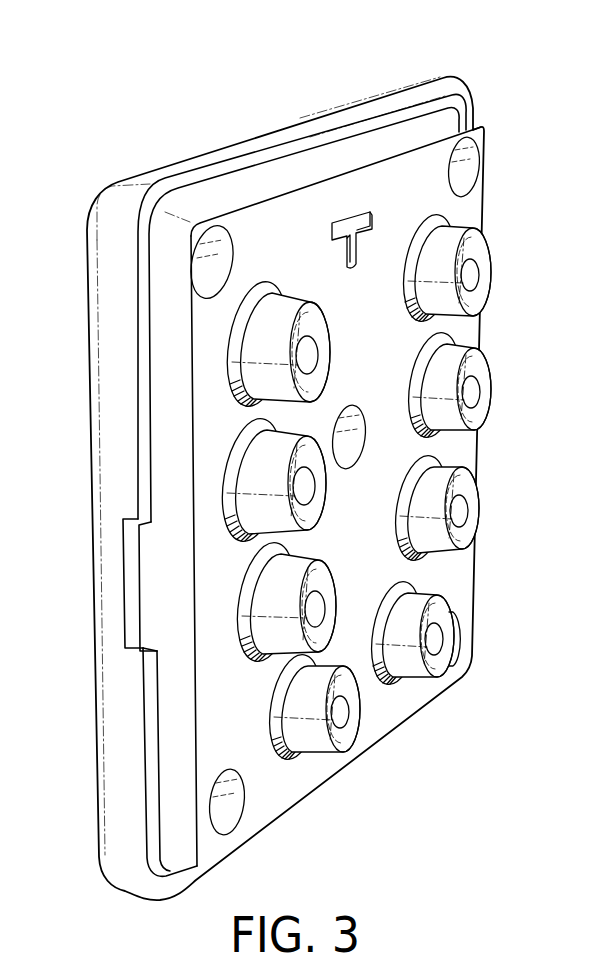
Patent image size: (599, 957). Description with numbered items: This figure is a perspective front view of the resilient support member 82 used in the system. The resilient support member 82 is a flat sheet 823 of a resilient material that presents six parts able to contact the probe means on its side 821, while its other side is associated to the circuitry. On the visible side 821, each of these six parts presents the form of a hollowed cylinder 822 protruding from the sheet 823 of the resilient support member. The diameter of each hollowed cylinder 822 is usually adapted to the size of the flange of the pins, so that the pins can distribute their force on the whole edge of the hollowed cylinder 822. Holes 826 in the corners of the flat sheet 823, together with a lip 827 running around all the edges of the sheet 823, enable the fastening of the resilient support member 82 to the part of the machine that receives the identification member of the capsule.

The resilient support member 82 is at (297, 458).
The side 821 is at (478, 216).
The hollowed cylinder 822 is at (481, 412).
The flat sheet 823 is at (153, 582).
The holes 826 is at (478, 170).
The lip 827 is at (112, 298).